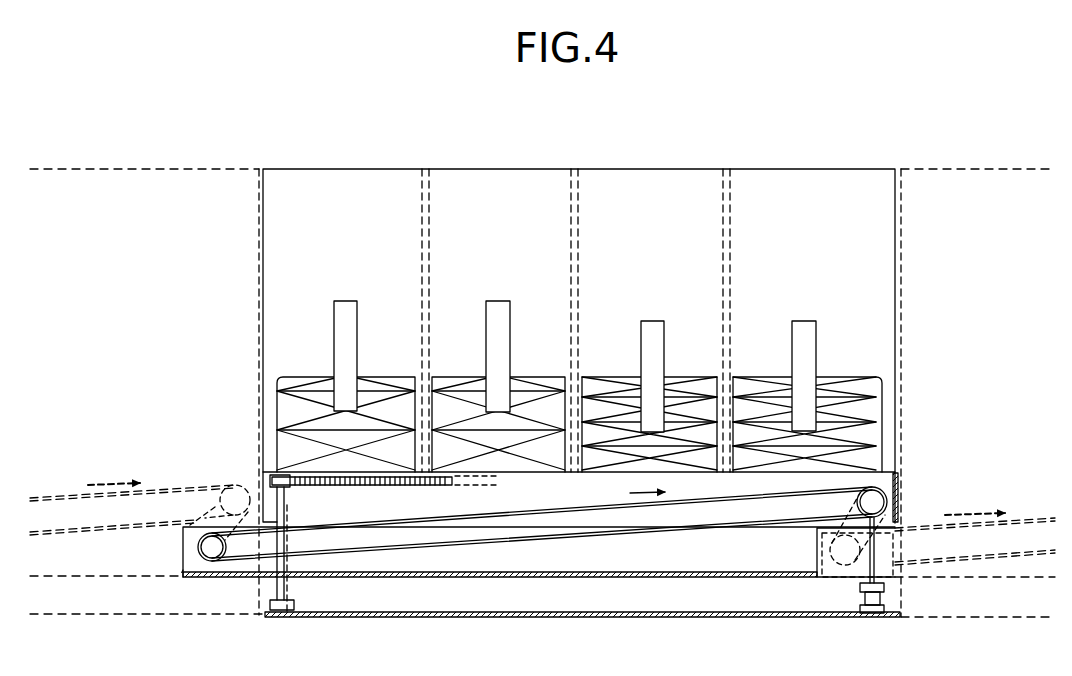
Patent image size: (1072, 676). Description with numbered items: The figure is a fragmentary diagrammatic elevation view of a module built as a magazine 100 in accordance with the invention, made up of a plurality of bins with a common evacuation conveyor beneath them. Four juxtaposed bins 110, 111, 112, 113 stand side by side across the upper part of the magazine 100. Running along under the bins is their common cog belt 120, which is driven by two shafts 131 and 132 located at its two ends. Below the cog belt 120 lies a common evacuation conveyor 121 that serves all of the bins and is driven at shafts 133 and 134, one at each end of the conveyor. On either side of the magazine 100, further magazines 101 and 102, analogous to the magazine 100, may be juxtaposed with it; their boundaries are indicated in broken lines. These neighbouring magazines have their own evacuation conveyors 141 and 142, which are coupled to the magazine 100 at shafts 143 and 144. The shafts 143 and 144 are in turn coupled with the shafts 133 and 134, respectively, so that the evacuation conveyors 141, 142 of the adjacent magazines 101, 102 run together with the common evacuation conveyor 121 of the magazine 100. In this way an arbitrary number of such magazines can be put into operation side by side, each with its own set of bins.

The magazine 100 is at (310, 166).
The magazine 101 is at (952, 166).
The magazine 102 is at (123, 166).
The bin 110 is at (402, 200).
The bin 111 is at (548, 200).
The bin 112 is at (695, 200).
The bin 113 is at (855, 200).
The common cog belt 120 is at (440, 485).
The common evacuation conveyor 121 is at (690, 498).
The shaft 131 is at (290, 587).
The shaft 132 is at (880, 570).
The shaft 133 is at (213, 553).
The shaft 134 is at (876, 498).
The evacuation conveyor 141 is at (1030, 520).
The evacuation conveyor 142 is at (172, 490).
The shaft 143 is at (232, 485).
The shaft 144 is at (845, 553).